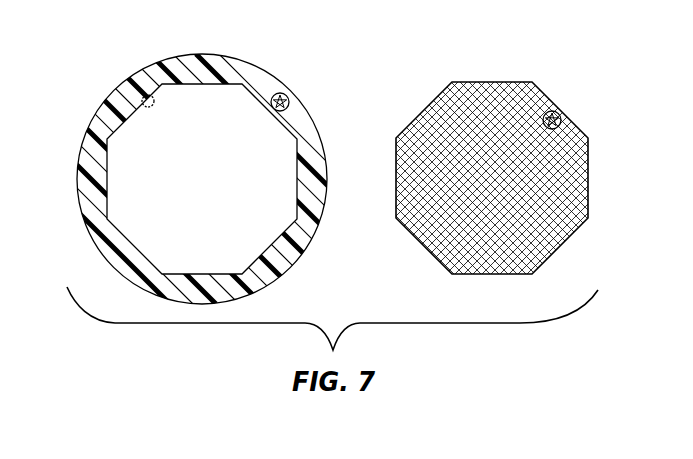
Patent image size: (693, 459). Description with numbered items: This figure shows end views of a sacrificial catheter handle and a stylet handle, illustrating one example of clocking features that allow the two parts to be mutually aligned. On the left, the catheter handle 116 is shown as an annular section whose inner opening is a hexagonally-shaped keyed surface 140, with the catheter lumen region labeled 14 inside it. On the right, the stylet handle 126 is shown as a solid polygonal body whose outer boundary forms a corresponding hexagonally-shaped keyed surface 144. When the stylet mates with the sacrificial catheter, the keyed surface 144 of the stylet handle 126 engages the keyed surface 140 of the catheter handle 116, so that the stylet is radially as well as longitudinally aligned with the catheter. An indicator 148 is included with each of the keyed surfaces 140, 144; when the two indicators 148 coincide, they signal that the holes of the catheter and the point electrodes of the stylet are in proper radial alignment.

The hub 14 is at (215, 190).
The handle 116 is at (115, 98).
The handle 126 is at (447, 120).
The keyed surface 140 is at (146, 94).
The keyed surface 144 is at (485, 80).
The indicator 148 is at (282, 93).